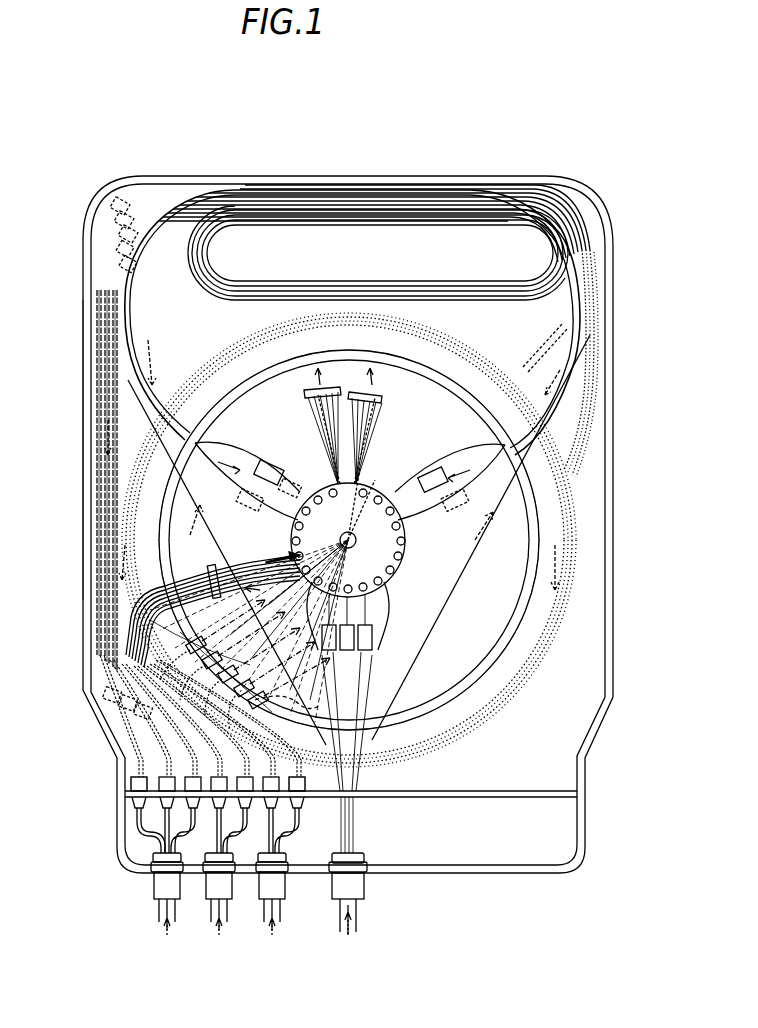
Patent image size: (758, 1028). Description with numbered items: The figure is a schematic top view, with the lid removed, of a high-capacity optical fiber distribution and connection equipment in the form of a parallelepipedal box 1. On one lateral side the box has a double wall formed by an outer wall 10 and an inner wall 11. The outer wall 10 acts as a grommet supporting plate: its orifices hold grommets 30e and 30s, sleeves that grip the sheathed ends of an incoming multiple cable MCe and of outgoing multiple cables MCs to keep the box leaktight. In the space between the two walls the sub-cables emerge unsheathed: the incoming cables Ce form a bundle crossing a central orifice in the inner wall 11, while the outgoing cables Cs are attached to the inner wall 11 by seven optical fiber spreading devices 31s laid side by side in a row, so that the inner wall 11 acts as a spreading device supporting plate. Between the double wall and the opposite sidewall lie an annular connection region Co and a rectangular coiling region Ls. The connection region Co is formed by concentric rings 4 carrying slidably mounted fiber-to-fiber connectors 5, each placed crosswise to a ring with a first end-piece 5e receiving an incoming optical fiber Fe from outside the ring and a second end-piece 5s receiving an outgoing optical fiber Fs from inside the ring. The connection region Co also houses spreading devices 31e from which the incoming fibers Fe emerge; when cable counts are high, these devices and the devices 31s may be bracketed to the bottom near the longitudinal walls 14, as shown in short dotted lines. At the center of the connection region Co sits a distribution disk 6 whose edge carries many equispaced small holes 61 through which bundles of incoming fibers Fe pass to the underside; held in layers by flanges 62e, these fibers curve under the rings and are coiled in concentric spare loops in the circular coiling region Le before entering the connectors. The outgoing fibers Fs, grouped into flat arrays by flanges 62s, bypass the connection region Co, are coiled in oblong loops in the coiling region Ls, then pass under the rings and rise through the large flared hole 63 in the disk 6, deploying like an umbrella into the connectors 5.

The box 1 is at (542, 155).
The outer wall 10 is at (503, 884).
The inner wall 11 is at (492, 796).
The longitudinal walls 14 is at (84, 460).
The concentric rings 4 is at (455, 695).
The fiber-to-fiber connectors 5 is at (160, 650).
The second V-grooved end-piece 5s is at (292, 678).
The first V-grooved end-piece 5e is at (290, 700).
The distribution disk 6 is at (395, 550).
The small holes 61 is at (368, 474).
The flanges 62e is at (310, 394).
The flanges 62s is at (95, 297).
The flared hole 63 is at (345, 534).
The grommets 30s is at (153, 886).
The grommet 30e is at (368, 880).
The optical fiber spreading devices 31s is at (112, 235).
The spreading devices 31e is at (262, 462).
The incoming cables Ce is at (140, 312).
The outgoing cables Cs is at (152, 830).
The connection region Co is at (355, 540).
The incoming optical fibers Fe is at (175, 648).
The outgoing optical fibers Fs is at (540, 337).
The coiling region Ls is at (382, 240).
The circular coiling region Le is at (552, 624).
The incoming multiple cable MCe is at (370, 915).
The outgoing multiple cables MCs is at (268, 920).